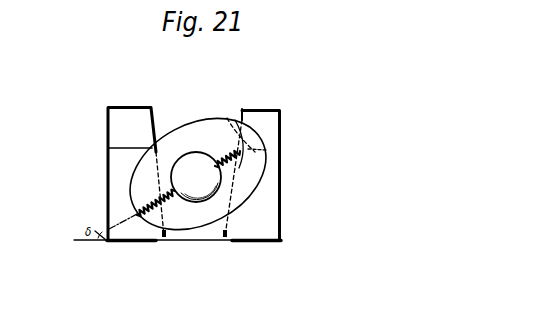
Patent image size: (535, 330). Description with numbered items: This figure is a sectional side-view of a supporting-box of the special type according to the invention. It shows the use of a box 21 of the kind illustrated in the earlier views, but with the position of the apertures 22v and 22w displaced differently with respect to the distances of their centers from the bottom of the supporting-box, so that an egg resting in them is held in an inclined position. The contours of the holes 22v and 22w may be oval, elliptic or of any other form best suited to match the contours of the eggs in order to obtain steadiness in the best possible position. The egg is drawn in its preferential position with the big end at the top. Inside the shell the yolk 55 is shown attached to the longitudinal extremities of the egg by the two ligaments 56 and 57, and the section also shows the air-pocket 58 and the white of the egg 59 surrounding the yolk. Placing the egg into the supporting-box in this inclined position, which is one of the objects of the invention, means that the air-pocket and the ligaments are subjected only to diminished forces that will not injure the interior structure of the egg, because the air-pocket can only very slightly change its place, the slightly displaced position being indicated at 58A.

The supporting-box 21 is at (133, 105).
The aperture 22v is at (163, 236).
The aperture 22w is at (235, 209).
The yolk 55 is at (197, 160).
The ligament 56 is at (240, 130).
The ligament 57 is at (138, 207).
The air-pocket 58 is at (268, 148).
The displaced position of air-pocket 58A is at (228, 116).
The white of the egg 59 is at (252, 190).